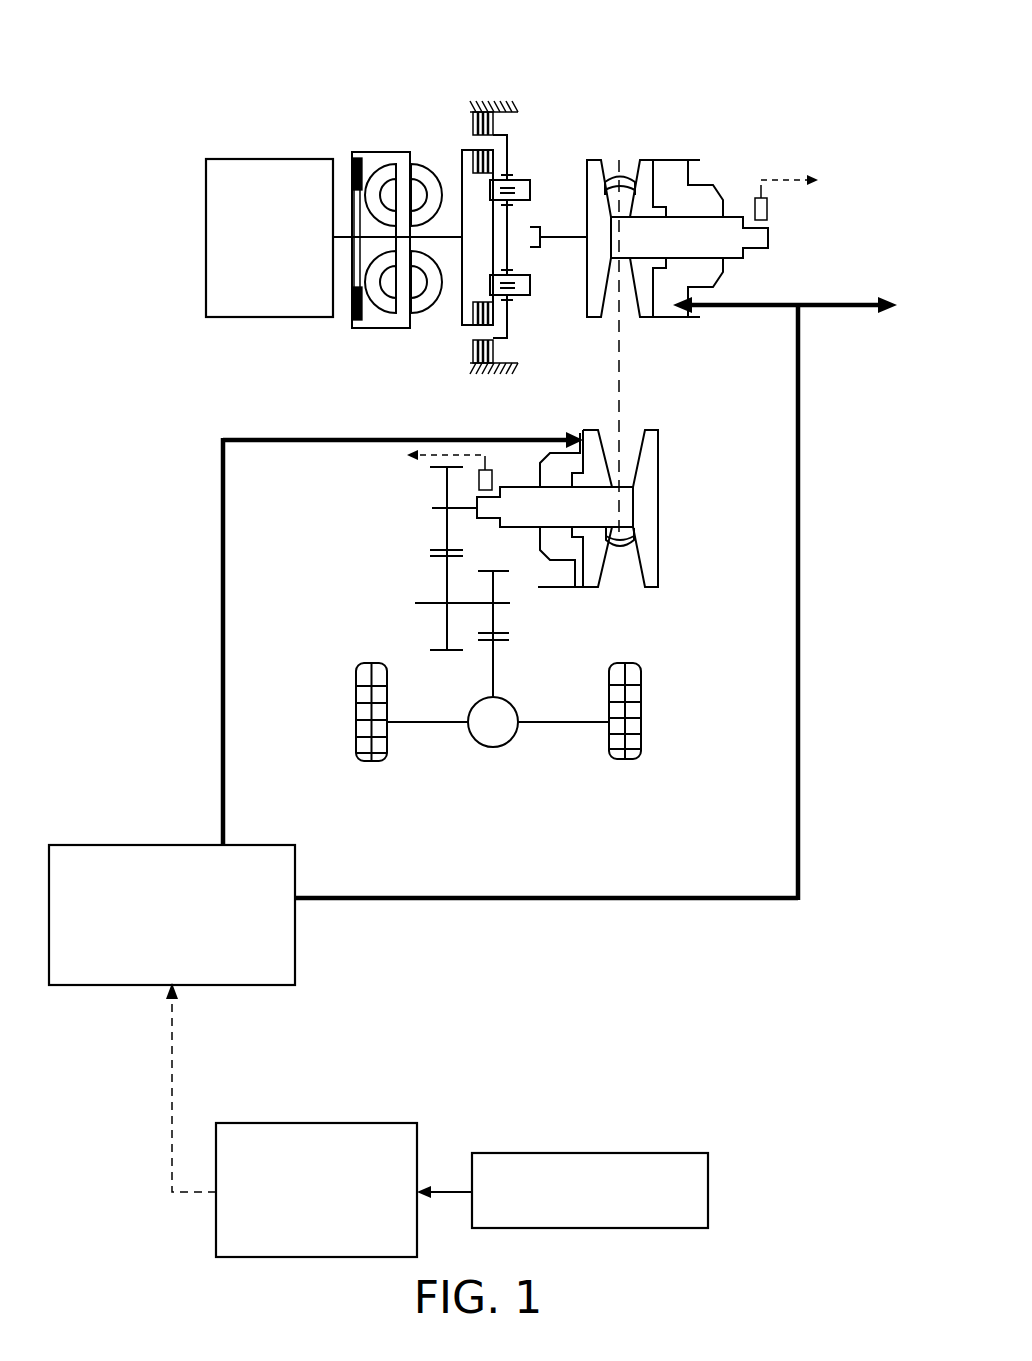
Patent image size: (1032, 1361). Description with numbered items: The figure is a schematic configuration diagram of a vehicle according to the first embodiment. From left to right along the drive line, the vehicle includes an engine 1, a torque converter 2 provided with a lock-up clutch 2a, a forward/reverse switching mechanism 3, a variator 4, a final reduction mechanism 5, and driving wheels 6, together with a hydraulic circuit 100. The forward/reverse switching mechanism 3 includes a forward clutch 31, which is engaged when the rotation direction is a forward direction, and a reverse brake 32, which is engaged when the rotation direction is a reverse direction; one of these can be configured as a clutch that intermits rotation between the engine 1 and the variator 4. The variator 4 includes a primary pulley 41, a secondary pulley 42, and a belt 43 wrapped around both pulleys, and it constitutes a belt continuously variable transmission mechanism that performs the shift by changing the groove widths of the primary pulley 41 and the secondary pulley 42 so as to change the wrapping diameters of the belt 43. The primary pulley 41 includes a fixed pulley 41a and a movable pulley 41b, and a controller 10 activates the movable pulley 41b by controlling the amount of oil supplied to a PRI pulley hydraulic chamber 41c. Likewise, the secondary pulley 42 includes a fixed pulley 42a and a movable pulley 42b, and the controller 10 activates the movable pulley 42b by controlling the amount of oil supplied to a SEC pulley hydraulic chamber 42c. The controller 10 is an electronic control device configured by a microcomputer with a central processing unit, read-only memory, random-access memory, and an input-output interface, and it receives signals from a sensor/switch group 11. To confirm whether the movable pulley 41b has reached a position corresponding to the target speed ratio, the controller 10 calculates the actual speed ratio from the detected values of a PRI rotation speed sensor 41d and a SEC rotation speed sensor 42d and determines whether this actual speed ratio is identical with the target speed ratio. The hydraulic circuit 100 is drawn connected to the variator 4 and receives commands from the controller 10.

The engine 1 is at (257, 158).
The torque converter 2 is at (382, 189).
The lock-up clutch 2a is at (358, 154).
The forward/reverse switching mechanism 3 is at (504, 187).
The forward clutch 31 is at (472, 149).
The reverse brake 32 is at (498, 99).
The variator 4 is at (614, 83).
The primary pulley 41 is at (698, 191).
The fixed pulley 41a is at (595, 159).
The movable pulley 41b is at (645, 159).
The PRI pulley hydraulic chamber 41c is at (670, 178).
The PRI rotation speed sensor 41d is at (768, 210).
The secondary pulley 42 is at (574, 521).
The fixed pulley 42a is at (658, 445).
The movable pulley 42b is at (593, 586).
The SEC pulley hydraulic chamber 42c is at (567, 564).
The SEC rotation speed sensor 42d is at (492, 478).
The belt 43 is at (627, 555).
The final reduction mechanism 5 is at (400, 568).
The driving wheels 6 is at (353, 727).
The controller 10 is at (305, 1122).
The sensor/switch group 11 is at (710, 1183).
The hydraulic circuit 100 is at (168, 845).